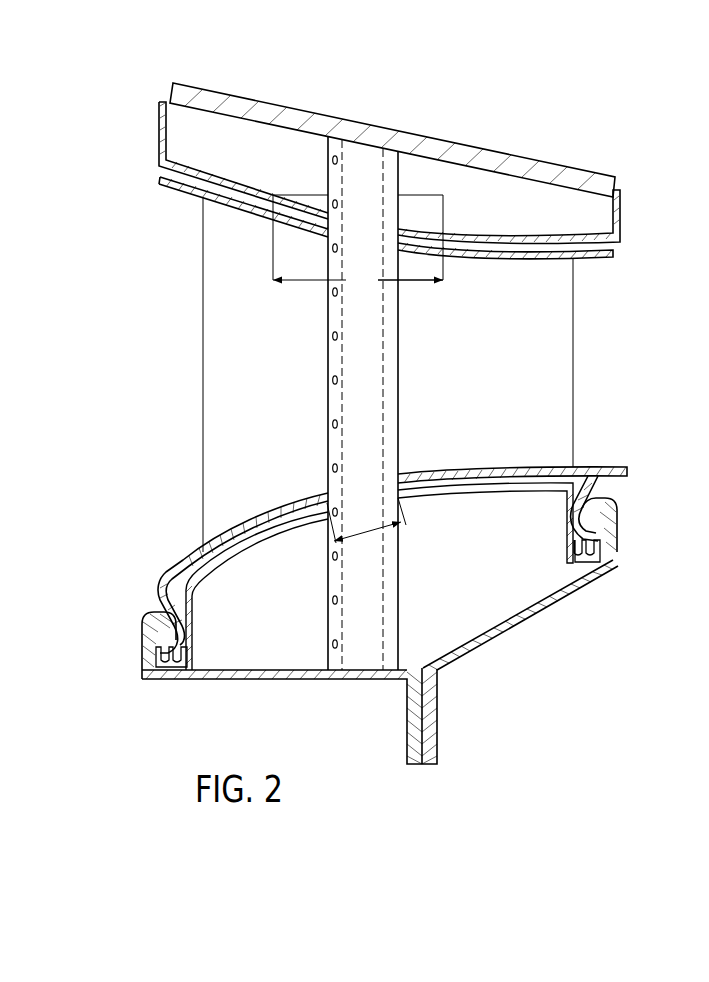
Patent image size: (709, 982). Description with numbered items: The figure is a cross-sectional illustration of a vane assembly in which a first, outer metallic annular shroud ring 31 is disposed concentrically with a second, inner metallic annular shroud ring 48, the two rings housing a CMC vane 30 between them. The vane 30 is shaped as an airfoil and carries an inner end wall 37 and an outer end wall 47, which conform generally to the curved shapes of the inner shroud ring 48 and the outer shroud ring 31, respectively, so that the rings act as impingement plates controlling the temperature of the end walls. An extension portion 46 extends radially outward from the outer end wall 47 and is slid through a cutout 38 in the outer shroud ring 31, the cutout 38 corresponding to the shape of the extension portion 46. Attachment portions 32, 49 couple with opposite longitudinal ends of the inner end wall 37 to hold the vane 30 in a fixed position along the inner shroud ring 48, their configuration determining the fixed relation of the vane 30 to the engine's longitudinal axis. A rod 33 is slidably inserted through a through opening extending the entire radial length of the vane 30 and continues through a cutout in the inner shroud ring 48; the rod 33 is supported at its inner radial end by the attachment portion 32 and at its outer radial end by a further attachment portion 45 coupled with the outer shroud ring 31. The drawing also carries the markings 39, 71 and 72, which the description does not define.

The vane 30 is at (497, 391).
The outer metallic annular shroud ring 31 is at (150, 133).
The attachment portion 32 is at (128, 646).
The rod 33 is at (378, 391).
The inner end wall 37 is at (178, 555).
The cutout 38 is at (375, 297).
The offset 39 is at (401, 522).
The further attachment portion 45 is at (458, 142).
The extension portion 46 is at (447, 213).
The outer end wall 47 is at (173, 196).
The inner metallic annular shroud ring 48 is at (238, 568).
The attachment portion 49 is at (508, 631).
The hidden edge line 71 is at (385, 445).
The fastener holes 72 is at (333, 380).